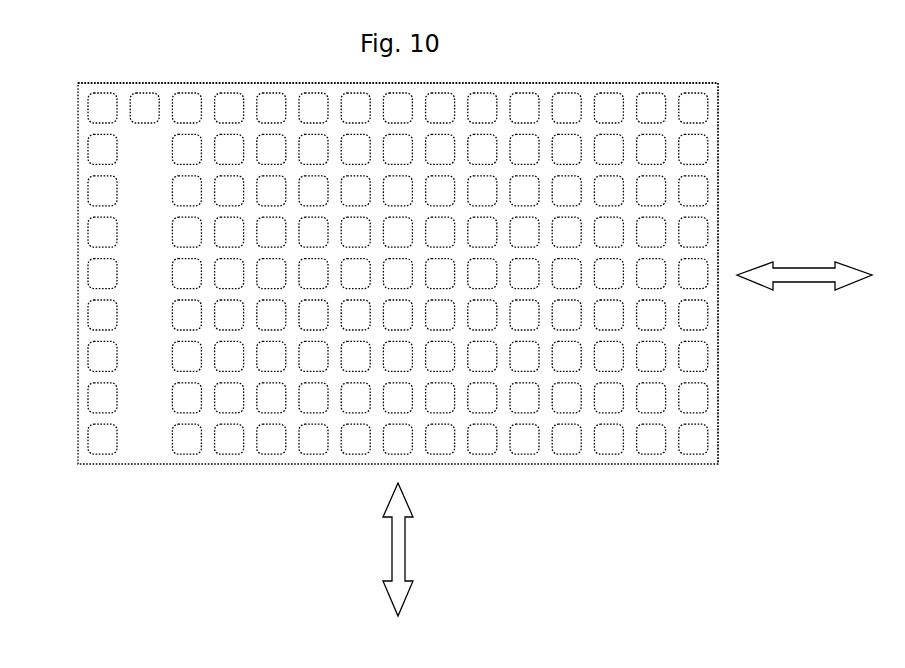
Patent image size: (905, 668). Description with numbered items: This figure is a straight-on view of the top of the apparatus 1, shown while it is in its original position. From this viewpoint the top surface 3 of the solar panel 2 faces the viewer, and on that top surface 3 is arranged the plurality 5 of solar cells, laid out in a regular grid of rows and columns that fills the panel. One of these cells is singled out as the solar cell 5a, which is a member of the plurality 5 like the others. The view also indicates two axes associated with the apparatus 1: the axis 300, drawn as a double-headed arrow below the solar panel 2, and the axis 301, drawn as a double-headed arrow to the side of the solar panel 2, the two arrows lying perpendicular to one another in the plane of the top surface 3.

The apparatus 1 is at (560, 80).
The solar panel 2 is at (719, 136).
The top surface 3 is at (292, 93).
The plurality of solar cells 5 is at (102, 193).
The solar cell 5a is at (143, 108).
The axis 300 is at (412, 549).
The axis 301 is at (808, 290).